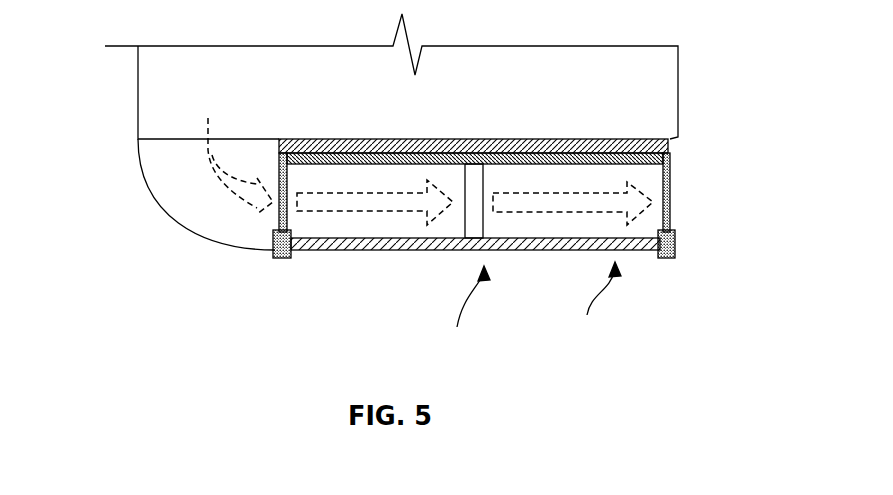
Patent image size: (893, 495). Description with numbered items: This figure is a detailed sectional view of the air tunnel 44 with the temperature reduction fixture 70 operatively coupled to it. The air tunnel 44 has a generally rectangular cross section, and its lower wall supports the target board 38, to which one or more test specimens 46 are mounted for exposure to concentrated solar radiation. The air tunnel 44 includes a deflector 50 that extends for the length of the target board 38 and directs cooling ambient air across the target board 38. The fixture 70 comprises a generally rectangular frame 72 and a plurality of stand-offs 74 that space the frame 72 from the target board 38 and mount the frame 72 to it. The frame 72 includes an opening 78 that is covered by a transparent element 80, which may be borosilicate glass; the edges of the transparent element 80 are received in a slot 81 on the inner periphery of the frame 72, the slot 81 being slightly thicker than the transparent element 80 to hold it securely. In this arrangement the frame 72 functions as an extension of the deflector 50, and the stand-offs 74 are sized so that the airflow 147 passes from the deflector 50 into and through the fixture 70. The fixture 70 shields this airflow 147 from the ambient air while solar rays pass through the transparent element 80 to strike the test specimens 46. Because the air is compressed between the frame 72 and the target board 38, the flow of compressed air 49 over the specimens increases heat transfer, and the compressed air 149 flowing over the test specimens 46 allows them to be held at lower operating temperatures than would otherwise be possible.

The air tunnel 44 is at (589, 55).
The target board 38 is at (495, 143).
The test specimen 46 is at (673, 140).
The stand-off 74 is at (672, 200).
The deflector 50 is at (148, 196).
The airflow 147 is at (236, 192).
The slot 81 is at (287, 257).
The frame 72 is at (342, 241).
The compressed air 49 is at (422, 205).
The temperature reduction fixture 70 is at (467, 313).
The transparent element 80 is at (523, 250).
The compressed air 149 is at (607, 203).
The opening 78 is at (598, 304).